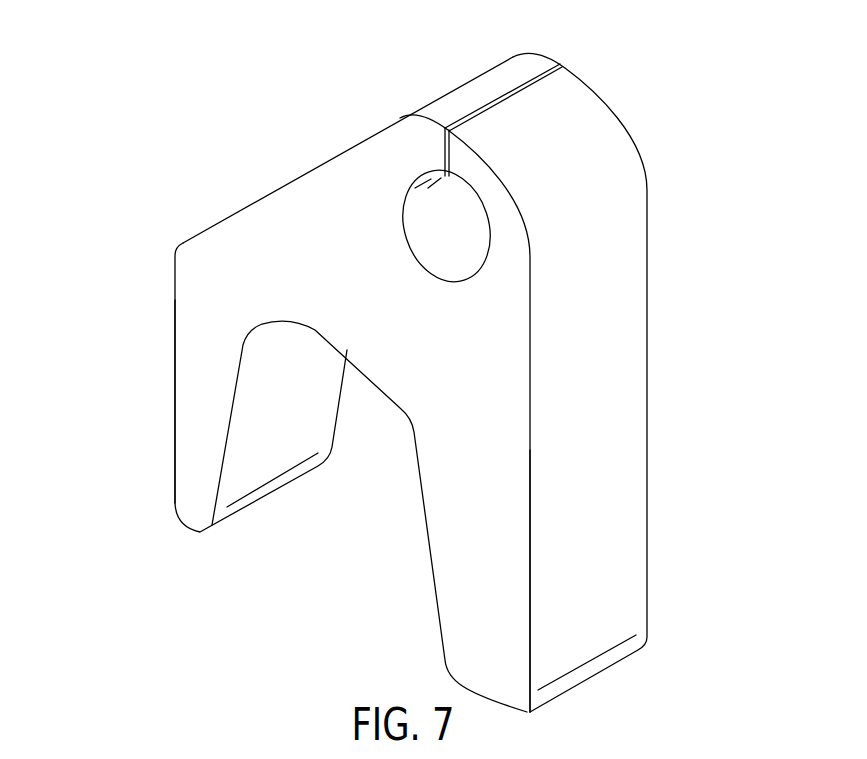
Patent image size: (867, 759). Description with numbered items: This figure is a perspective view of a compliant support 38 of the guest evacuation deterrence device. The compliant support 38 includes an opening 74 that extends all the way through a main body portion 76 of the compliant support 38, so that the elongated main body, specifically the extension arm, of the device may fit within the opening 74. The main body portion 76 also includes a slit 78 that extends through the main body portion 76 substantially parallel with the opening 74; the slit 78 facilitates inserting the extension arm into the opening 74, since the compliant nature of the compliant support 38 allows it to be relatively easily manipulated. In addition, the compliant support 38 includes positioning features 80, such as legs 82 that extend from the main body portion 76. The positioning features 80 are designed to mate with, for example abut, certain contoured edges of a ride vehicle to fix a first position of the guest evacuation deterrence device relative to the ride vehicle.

The compliant support 38 is at (399, 362).
The opening 74 is at (447, 232).
The main body portion 76 is at (468, 338).
The slit 78 is at (537, 78).
The positioning features 80 is at (280, 517).
The legs 82 is at (175, 430).